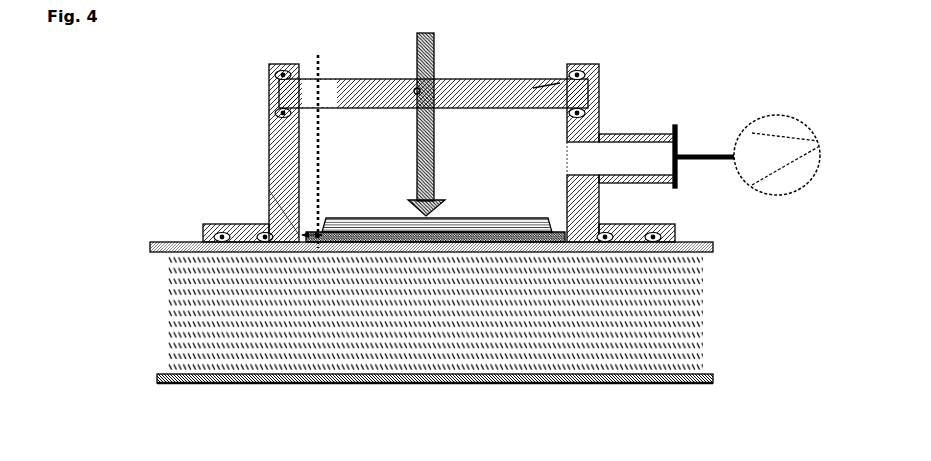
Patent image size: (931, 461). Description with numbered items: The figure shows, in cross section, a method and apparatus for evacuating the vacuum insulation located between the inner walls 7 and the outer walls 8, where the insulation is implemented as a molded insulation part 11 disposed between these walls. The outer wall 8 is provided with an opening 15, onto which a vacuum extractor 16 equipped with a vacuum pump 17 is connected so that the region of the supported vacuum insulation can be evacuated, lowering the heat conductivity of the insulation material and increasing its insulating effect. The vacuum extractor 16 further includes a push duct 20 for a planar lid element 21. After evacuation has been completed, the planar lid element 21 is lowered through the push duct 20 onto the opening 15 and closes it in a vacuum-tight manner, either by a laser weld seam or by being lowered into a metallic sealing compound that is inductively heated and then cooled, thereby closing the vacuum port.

The inner walls 7 is at (158, 377).
The outer walls 8 is at (163, 246).
The molded insulation part 11 is at (402, 331).
The opening 15 is at (409, 253).
The vacuum extractor 16 is at (601, 119).
The vacuum pump 17 is at (757, 139).
The push duct 20 is at (443, 91).
The planar lid element 21 is at (268, 168).